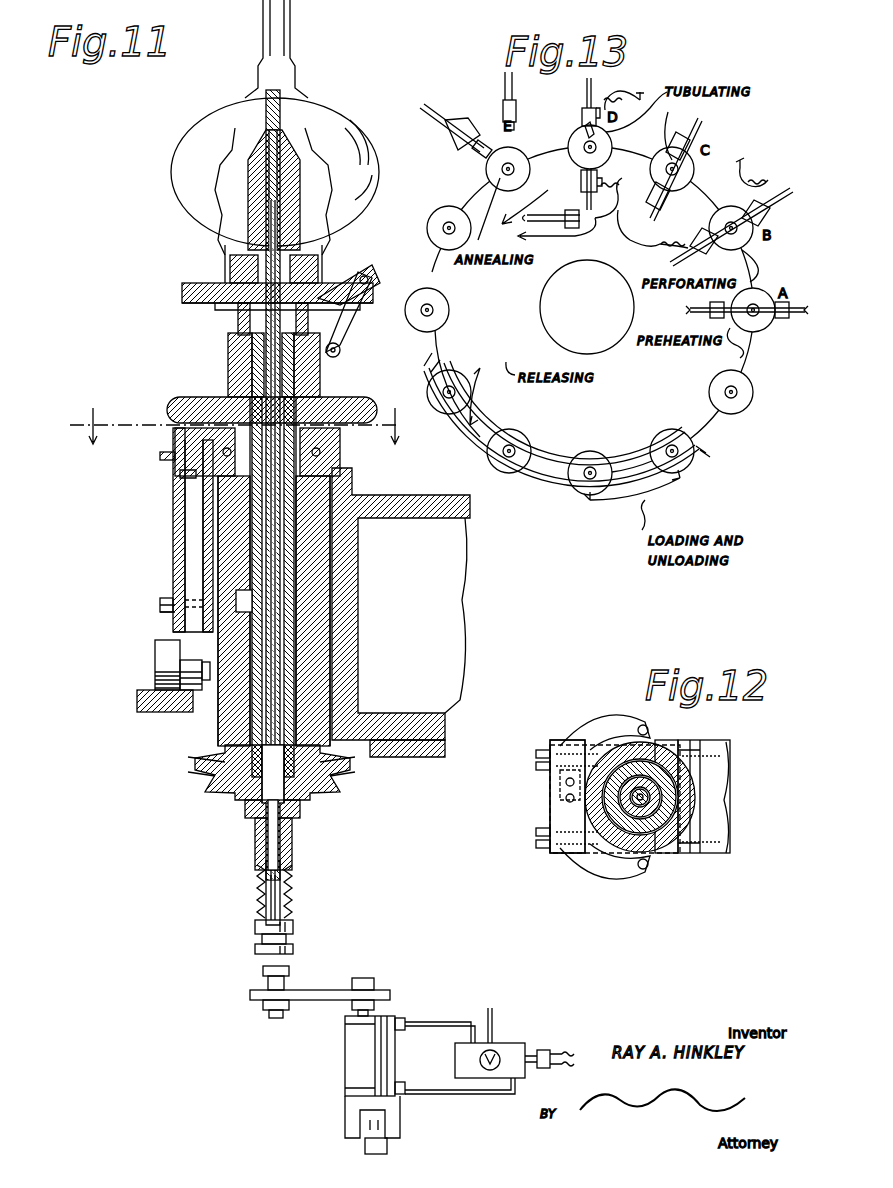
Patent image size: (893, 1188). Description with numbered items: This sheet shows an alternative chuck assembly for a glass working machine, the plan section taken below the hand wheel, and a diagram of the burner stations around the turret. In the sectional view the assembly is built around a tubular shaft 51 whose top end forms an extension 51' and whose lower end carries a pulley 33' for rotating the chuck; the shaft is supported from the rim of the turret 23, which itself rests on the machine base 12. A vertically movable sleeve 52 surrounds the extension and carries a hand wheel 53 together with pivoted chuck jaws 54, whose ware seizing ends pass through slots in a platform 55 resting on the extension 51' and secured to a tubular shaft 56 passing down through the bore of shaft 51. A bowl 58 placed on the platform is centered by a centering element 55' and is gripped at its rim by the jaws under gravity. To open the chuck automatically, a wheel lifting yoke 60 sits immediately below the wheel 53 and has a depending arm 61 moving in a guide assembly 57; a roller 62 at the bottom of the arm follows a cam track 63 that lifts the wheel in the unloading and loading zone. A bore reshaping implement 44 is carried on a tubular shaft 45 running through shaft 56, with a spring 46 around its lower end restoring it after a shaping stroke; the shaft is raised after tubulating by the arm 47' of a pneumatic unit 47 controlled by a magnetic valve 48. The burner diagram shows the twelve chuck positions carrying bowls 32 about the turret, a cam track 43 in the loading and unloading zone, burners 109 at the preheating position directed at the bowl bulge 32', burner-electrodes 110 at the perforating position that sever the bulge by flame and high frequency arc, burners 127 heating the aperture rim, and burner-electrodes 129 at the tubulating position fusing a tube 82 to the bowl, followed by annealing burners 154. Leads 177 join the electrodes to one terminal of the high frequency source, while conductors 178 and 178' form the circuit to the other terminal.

In FIG. 11, the bowl 58 is at (190, 152).
In FIG. 11, the bore reshaping implement 44 is at (258, 172).
In FIG. 11, the centering element 55' is at (244, 257).
In FIG. 11, the platform 55 is at (261, 282).
In FIG. 11, the chuck jaws 54 is at (344, 338).
In FIG. 11, the extension 51' is at (247, 321).
In FIG. 11, the vertically movable sleeve 52 is at (228, 352).
In FIG. 11, the hand wheel 53 is at (180, 404).
In FIG. 11, the base 12 is at (236, 417).
In FIG. 11, the wheel lifting yoke 60 is at (183, 441).
In FIG. 12, the wheel lifting yoke 60 is at (608, 728).
In FIG. 11, the guide assembly 57 is at (204, 526).
In FIG. 12, the guide assembly 57 is at (560, 852).
In FIG. 11, the depending arm 61 is at (193, 545).
In FIG. 12, the depending arm 61 is at (552, 800).
In FIG. 11, the roller 62 is at (168, 658).
In FIG. 11, the cam track 63 is at (143, 692).
In FIG. 13, the cam track 63 is at (542, 482).
In FIG. 11, the tubular shaft 51 is at (249, 587).
In FIG. 11, the turret 23 is at (434, 496).
In FIG. 12, the turret 23 is at (730, 744).
In FIG. 11, the pulley 33' is at (248, 774).
In FIG. 11, the tubular shaft 56 is at (292, 849).
In FIG. 11, the tubular shaft 45 is at (262, 869).
In FIG. 11, the spring 46 is at (255, 906).
In FIG. 11, the arm 47' is at (320, 1001).
In FIG. 11, the pneumatic unit 47 is at (354, 1085).
In FIG. 11, the magnetic valve 48 is at (504, 1046).
In FIG. 13, the bowl 32 is at (590, 243).
In FIG. 13, the bowl bulge 32' is at (762, 366).
In FIG. 13, the cam track 43 is at (626, 452).
In FIG. 13, the burners 154 is at (503, 116).
In FIG. 13, the burner-electrodes 129 is at (583, 144).
In FIG. 13, the leads 177 is at (688, 130).
In FIG. 13, the burners 127 is at (674, 164).
In FIG. 13, the tube 82 is at (676, 168).
In FIG. 13, the burner-electrodes 110 is at (702, 232).
In FIG. 13, the burners 109 is at (718, 304).
In FIG. 13, the conductor 178' is at (557, 229).
In FIG. 13, the conductor 178 is at (639, 215).